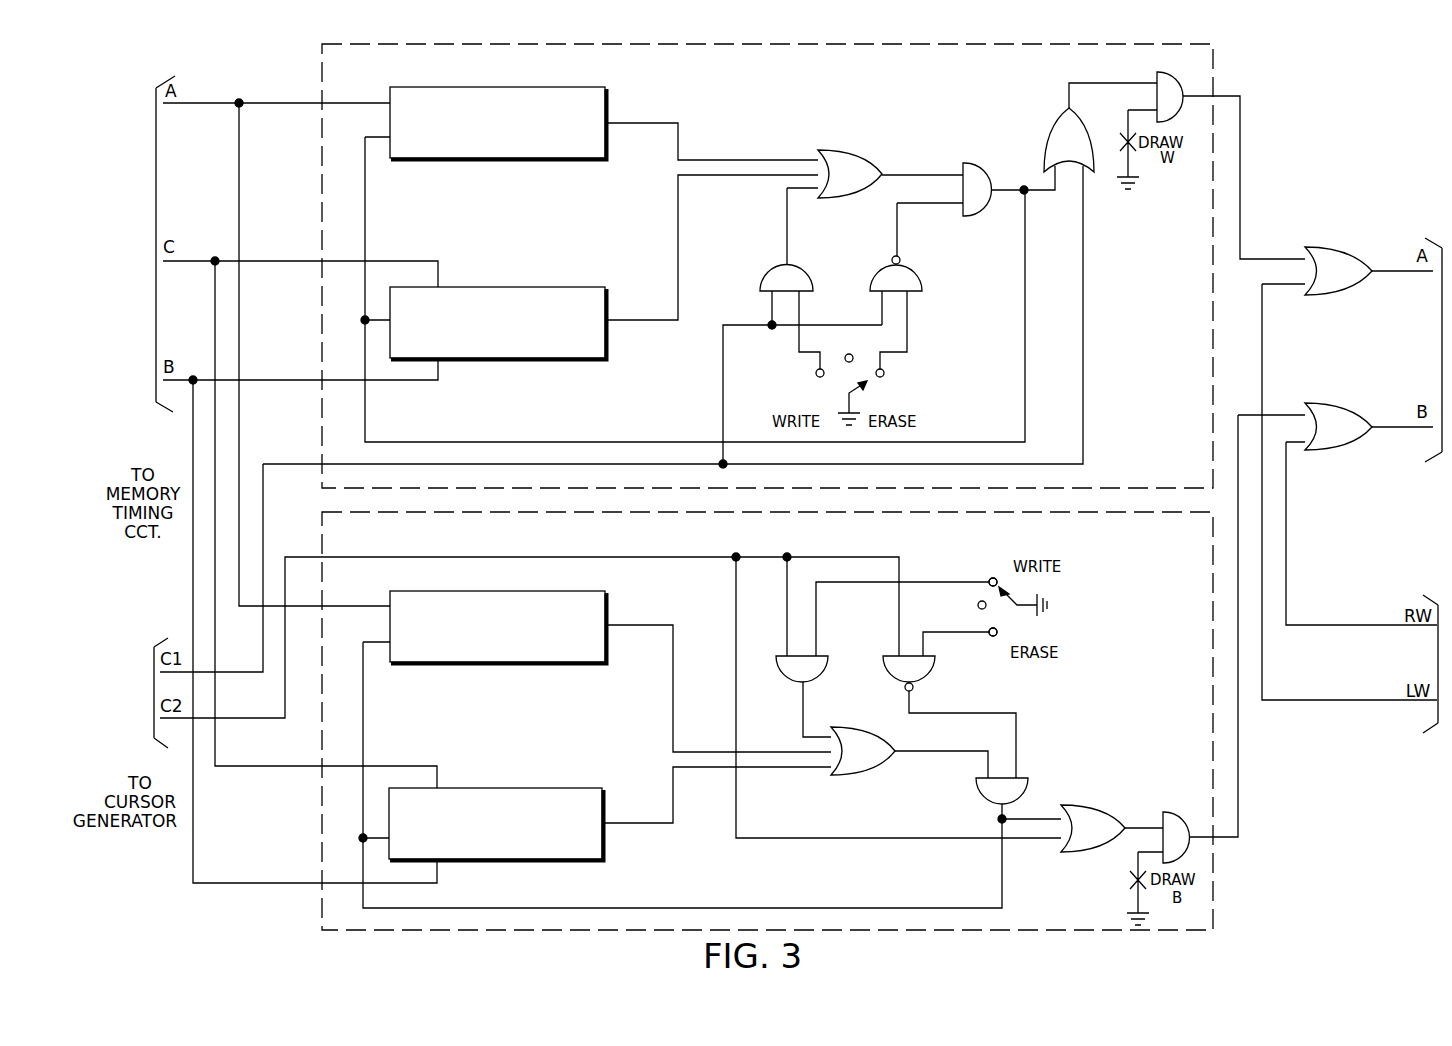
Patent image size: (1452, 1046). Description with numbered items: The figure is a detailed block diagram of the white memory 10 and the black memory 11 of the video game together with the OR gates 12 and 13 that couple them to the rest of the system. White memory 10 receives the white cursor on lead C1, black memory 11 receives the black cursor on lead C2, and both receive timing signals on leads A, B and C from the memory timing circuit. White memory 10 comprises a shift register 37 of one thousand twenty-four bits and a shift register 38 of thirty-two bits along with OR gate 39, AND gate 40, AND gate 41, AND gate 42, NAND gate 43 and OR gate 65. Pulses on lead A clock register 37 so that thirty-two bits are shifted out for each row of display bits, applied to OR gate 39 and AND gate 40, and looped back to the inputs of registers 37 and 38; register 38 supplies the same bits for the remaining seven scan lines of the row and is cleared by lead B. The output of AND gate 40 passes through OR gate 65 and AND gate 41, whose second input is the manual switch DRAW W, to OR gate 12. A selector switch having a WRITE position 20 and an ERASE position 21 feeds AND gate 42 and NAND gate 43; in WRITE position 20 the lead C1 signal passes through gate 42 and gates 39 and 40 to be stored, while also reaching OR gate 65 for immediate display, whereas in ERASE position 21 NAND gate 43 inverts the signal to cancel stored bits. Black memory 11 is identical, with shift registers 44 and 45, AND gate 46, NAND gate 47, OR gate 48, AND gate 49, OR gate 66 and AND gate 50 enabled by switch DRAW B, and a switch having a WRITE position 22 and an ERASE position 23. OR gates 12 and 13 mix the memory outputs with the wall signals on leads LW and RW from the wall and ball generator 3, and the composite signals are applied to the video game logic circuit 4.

The wall and ball generator 3 is at (1340, 797).
The video game logic circuit 4 is at (1367, 504).
The white memory 10 is at (1210, 456).
The black memory 11 is at (1210, 536).
The OR gate 12 is at (1335, 250).
The OR gate 13 is at (1335, 406).
The WRITE position 20 is at (817, 376).
The ERASE position 21 is at (883, 376).
The WRITE position 22 is at (992, 578).
The ERASE position 23 is at (995, 636).
The 1,024 bit shift register 37 is at (605, 160).
The 32 bit shift register 38 is at (605, 360).
The OR gate 39 is at (851, 153).
The AND gate 40 is at (976, 170).
The AND gate 41 is at (1168, 72).
The AND gate 42 is at (818, 272).
The NAND gate 43 is at (927, 272).
The shift register 44 is at (605, 664).
The shift register 45 is at (602, 861).
The AND gate 46 is at (794, 680).
The NAND gate 47 is at (896, 680).
The OR gate 48 is at (871, 772).
The AND gate 49 is at (987, 798).
The AND gate 50 is at (1170, 812).
The OR gate 65 is at (1060, 116).
The OR gate 66 is at (1080, 852).